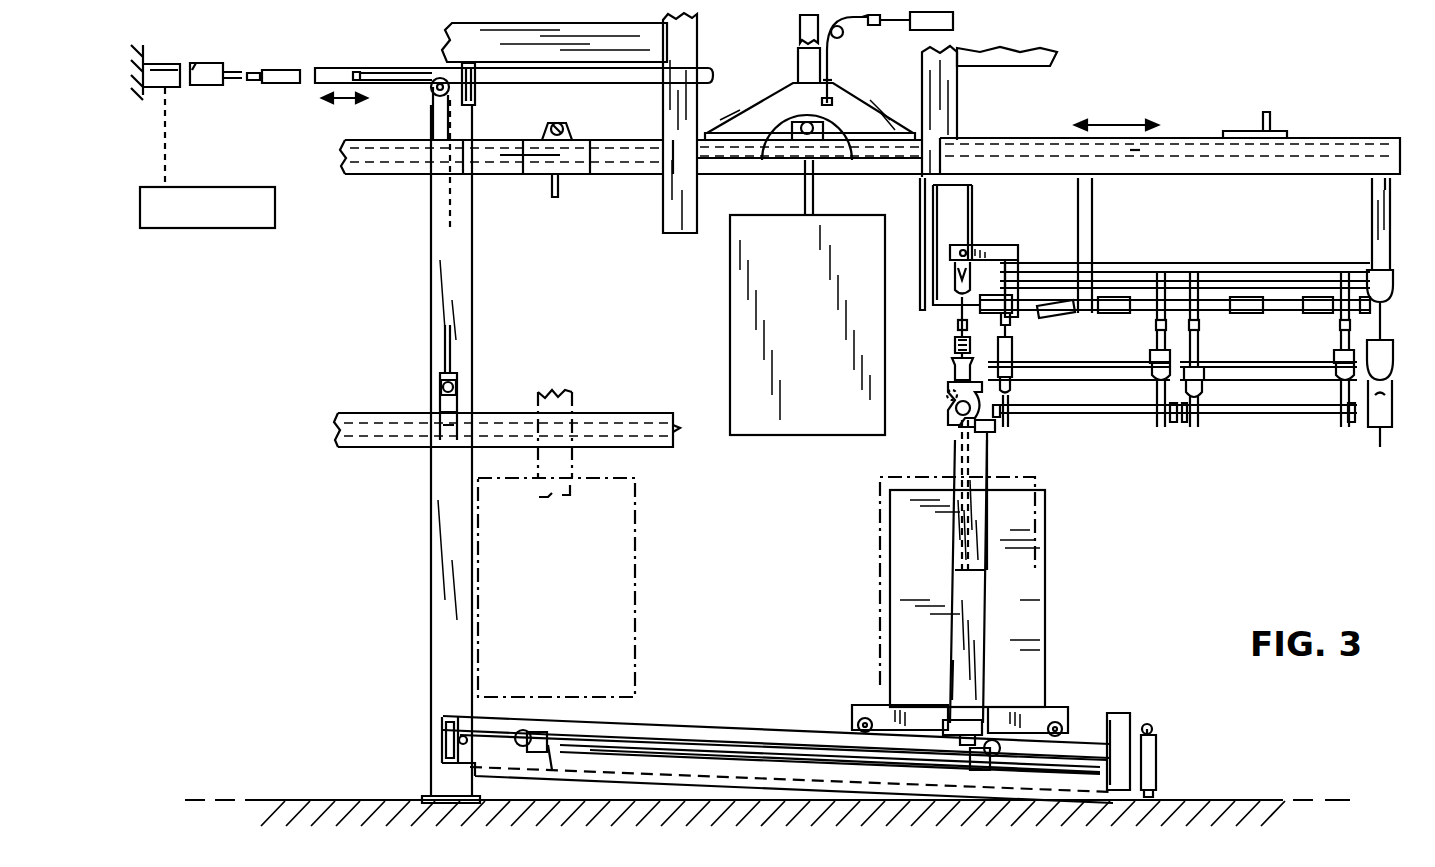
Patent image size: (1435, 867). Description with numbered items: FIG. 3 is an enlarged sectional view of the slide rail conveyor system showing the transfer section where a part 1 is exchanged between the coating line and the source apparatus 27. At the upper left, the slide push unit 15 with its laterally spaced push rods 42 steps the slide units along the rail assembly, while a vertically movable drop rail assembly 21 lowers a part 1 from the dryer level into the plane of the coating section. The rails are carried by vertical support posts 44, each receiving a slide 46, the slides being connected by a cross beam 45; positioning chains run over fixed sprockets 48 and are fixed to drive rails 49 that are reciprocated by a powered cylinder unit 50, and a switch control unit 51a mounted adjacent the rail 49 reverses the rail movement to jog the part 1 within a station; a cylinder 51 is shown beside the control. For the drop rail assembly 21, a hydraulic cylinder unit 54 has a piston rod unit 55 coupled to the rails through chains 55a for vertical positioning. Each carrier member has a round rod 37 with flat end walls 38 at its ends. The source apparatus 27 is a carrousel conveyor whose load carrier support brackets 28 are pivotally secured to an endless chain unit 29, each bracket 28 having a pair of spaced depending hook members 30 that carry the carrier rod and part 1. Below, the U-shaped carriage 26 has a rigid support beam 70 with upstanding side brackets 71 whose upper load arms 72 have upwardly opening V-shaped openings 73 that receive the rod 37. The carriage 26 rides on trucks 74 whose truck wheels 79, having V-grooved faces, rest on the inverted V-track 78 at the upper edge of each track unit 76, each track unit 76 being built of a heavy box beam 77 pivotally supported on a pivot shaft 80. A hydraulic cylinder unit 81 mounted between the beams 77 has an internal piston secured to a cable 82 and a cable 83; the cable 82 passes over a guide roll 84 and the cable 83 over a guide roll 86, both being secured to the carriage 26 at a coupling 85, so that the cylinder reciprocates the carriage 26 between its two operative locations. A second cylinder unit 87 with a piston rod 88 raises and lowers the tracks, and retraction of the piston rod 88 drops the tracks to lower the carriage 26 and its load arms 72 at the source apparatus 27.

The part 1 is at (810, 310).
The slide push unit 15 is at (1250, 97).
The drop rail assembly 21 is at (862, 165).
The carriage 26 is at (1000, 608).
The source apparatus 27 is at (1200, 250).
The load carrier support bracket 28 is at (955, 366).
The endless chain unit 29 is at (958, 322).
The hook member 30 is at (990, 393).
The round rod 37 is at (565, 124).
The end wall 38 is at (555, 125).
The push rod 42 is at (1183, 142).
The vertical support post 44 is at (459, 331).
The cross beam 45 is at (458, 387).
The slide 46 is at (443, 404).
The fixed sprocket 48 is at (431, 92).
The drive rail 49 is at (350, 68).
The powered cylinder unit 50 is at (210, 86).
The sensor 51 is at (265, 84).
The switch control unit 51a is at (275, 218).
The hydraulic cylinder unit 54 is at (925, 22).
The piston rod unit 55 is at (897, 24).
The chain 55a is at (832, 78).
The support beam 70 is at (950, 718).
The side bracket 71 is at (955, 648).
The upper load arm 72 is at (990, 462).
The V-shaped opening 73 is at (985, 433).
The truck 74 is at (875, 696).
The track unit 76 is at (643, 798).
The box beam 77 is at (750, 786).
The inverted V-track 78 is at (757, 702).
The truck wheel 79 is at (1063, 736).
The pivot shaft 80 is at (445, 740).
The hydraulic cylinder unit 81 is at (657, 747).
The cable 82 is at (990, 740).
The cable 83 is at (825, 736).
The guide roll 84 is at (997, 757).
The coupling 85 is at (975, 720).
The guide roll 86 is at (517, 729).
The second cylinder unit 87 is at (1160, 768).
The piston rod 88 is at (1153, 736).